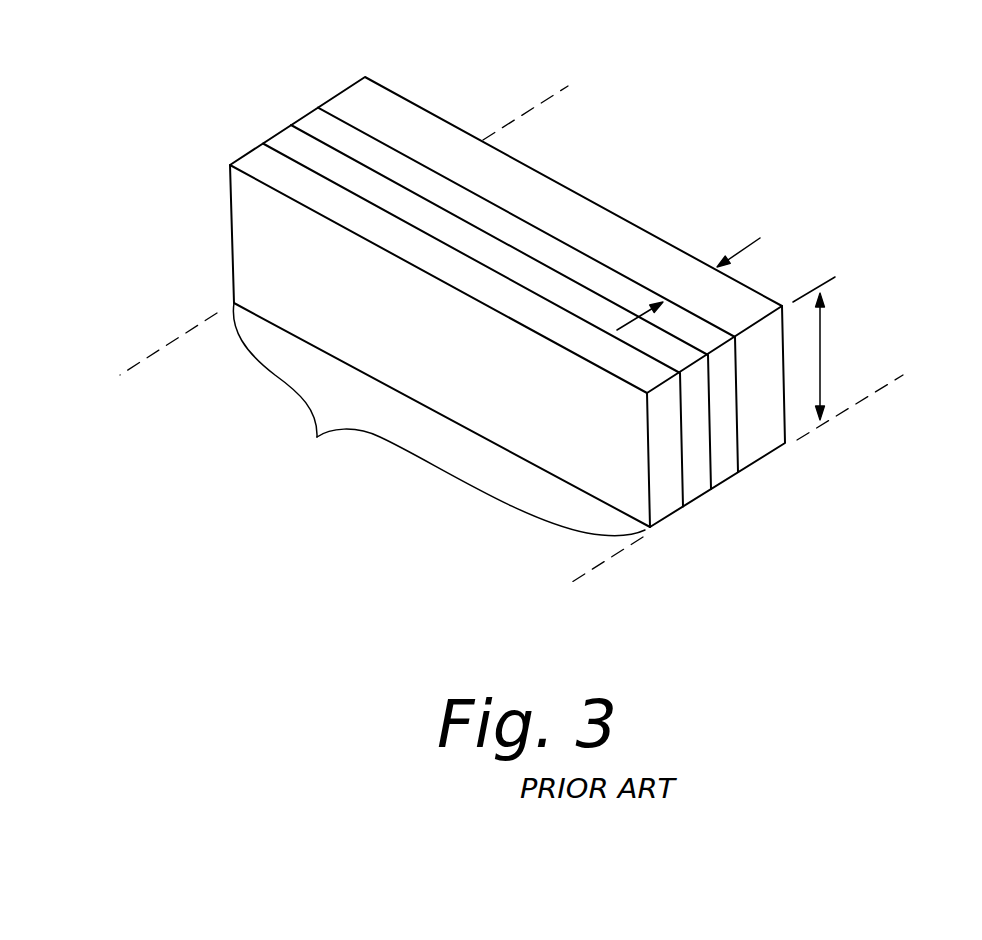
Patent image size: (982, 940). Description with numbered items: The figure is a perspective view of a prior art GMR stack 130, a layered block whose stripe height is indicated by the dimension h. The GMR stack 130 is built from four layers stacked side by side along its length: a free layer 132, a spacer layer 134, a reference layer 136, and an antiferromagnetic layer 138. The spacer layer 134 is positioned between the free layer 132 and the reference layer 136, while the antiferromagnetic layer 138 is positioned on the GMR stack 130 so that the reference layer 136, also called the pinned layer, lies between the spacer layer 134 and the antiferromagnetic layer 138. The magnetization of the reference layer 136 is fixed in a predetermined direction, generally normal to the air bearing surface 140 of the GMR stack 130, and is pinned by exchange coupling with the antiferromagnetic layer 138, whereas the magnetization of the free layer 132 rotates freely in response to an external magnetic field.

The GMR stack 130 is at (665, 158).
The free layer 132 is at (402, 115).
The spacer layer 134 is at (318, 125).
The reference layer 136 is at (288, 138).
The antiferromagnetic layer 138 is at (278, 167).
The air bearing surface 140 is at (439, 419).